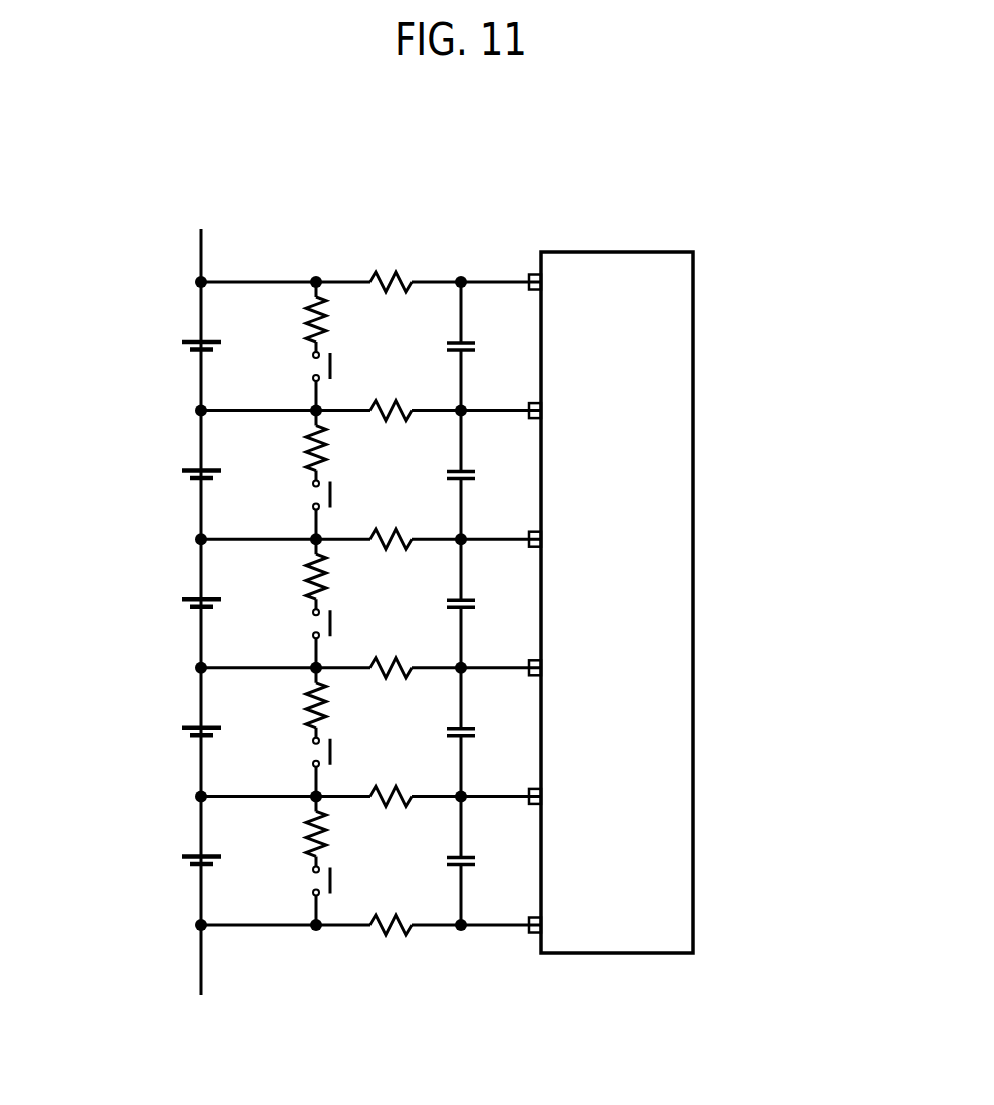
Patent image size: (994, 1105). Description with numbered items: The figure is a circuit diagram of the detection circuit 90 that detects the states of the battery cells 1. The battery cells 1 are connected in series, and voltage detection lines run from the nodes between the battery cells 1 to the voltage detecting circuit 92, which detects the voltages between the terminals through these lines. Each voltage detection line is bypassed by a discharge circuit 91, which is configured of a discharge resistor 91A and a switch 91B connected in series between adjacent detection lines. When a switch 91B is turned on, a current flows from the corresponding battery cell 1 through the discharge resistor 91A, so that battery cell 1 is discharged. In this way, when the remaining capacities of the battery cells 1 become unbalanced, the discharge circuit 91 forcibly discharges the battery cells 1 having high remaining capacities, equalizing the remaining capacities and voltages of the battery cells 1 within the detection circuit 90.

The battery cell 1 is at (164, 335).
The detection circuit 90 is at (513, 588).
The discharge circuit 91 is at (484, 531).
The discharge resistor 91A is at (350, 320).
The switch 91B is at (360, 374).
The voltage detecting circuit 92 is at (637, 282).